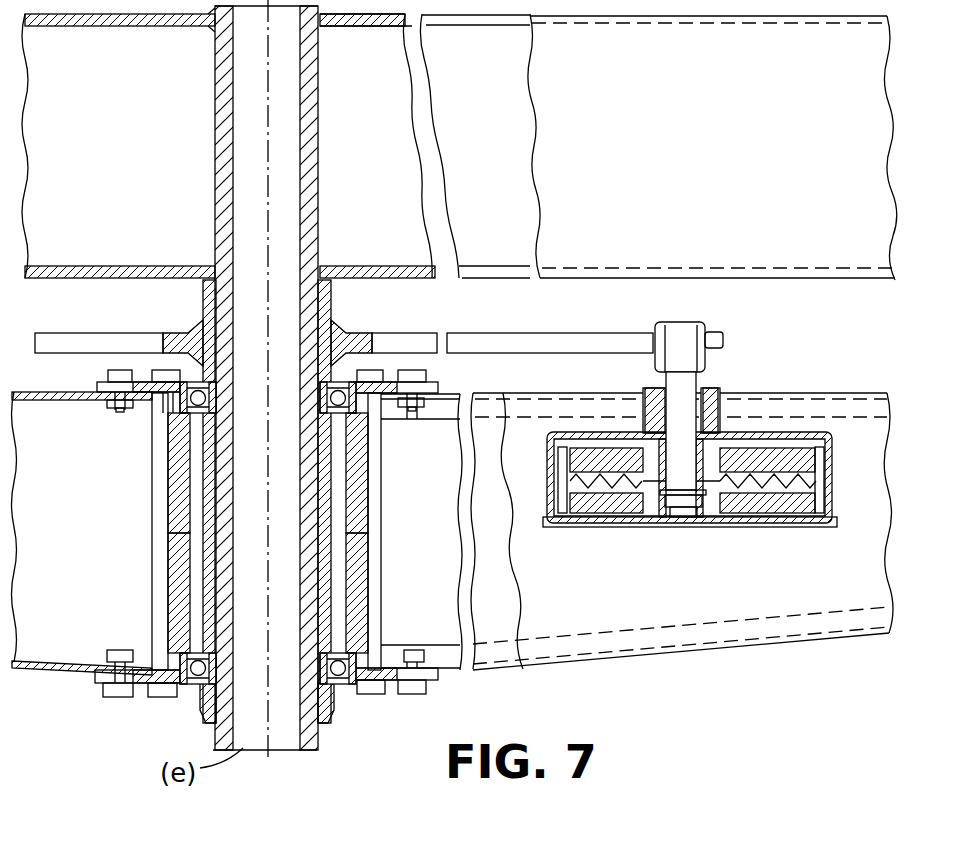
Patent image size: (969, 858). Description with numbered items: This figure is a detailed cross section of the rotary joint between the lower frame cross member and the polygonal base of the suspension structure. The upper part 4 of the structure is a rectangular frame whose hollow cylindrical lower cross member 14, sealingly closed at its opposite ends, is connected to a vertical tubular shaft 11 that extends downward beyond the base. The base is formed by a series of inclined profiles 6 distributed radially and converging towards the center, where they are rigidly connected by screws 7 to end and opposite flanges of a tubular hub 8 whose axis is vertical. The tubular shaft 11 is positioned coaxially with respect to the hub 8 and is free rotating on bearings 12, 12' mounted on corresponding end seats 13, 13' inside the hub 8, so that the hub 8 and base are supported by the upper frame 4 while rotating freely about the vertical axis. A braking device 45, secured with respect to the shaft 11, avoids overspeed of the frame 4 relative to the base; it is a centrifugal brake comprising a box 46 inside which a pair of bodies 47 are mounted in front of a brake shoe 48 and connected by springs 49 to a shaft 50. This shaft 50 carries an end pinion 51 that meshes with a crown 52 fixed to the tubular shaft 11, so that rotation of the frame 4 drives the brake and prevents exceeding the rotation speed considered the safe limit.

The upper part 4 is at (138, 50).
The hollow cylindrical lower cross member 14 is at (92, 280).
The tubular shaft 11 is at (222, 537).
The crown 52 is at (500, 340).
The end pinion 51 is at (657, 350).
The profiles 6 is at (53, 650).
The tubular hub 8 is at (173, 527).
The screws 7 is at (400, 417).
The bearing 12' is at (268, 387).
The bearing 12 is at (268, 654).
The end seat 13' is at (234, 473).
The end seat 13 is at (268, 593).
The braking device 45 is at (806, 414).
The box 46 is at (832, 472).
The bodies 47 is at (640, 500).
The brake shoe 48 is at (560, 520).
The springs 49 is at (612, 484).
The shaft 50 is at (688, 417).